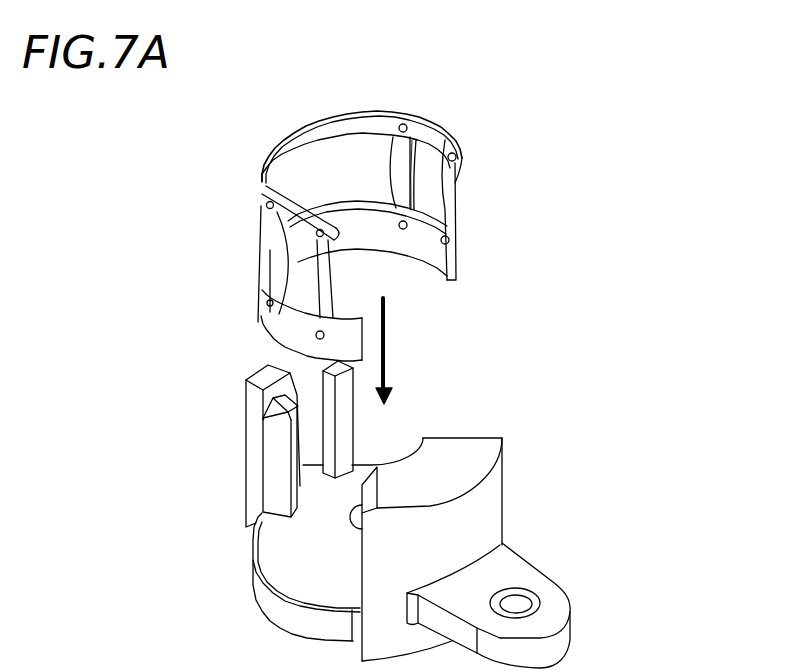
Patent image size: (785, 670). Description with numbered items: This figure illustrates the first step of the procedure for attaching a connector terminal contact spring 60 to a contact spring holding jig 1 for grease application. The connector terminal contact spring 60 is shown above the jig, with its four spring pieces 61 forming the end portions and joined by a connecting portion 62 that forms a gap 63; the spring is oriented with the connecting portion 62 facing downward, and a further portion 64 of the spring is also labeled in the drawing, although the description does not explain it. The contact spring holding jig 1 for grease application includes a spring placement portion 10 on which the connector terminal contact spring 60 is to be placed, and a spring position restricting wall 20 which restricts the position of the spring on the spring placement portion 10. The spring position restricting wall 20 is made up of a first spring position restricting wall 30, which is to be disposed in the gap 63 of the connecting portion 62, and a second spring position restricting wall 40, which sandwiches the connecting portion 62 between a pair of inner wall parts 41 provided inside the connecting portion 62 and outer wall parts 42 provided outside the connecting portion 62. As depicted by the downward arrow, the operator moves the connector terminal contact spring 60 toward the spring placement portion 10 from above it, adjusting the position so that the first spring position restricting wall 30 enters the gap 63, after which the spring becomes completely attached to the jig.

The contact spring holding jig for grease application 1 is at (488, 407).
The spring placement portion 10 is at (302, 607).
The spring position restricting wall 20 is at (692, 477).
The first spring position restricting wall 30 is at (513, 485).
The second spring position restricting wall 40 is at (257, 353).
The inner wall parts 41 is at (263, 465).
The outer wall parts 42 is at (243, 405).
The connector terminal contact spring 60 is at (376, 100).
The spring pieces 61 is at (385, 168).
The connecting portion 62 is at (285, 334).
The gap 63 is at (440, 282).
The flexible strip 64 is at (426, 185).